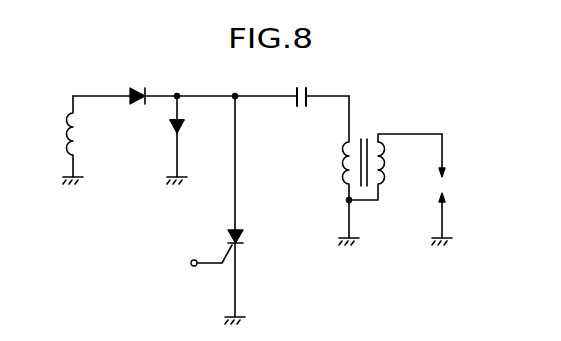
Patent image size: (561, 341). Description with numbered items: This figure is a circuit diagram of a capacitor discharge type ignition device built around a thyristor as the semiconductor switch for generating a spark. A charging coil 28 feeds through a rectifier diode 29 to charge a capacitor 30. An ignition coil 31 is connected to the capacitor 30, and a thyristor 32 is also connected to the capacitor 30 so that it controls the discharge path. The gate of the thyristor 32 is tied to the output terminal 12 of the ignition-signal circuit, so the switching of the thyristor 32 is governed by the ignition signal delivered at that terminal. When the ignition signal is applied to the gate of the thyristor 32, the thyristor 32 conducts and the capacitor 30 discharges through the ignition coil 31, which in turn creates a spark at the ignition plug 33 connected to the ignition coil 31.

The output terminal 12 is at (196, 259).
The charging coil 28 is at (80, 133).
The rectifier diode 29 is at (138, 88).
The capacitor 30 is at (318, 73).
The ignition coil 31 is at (343, 162).
The thyristor 32 is at (243, 238).
The ignition plug 33 is at (445, 186).